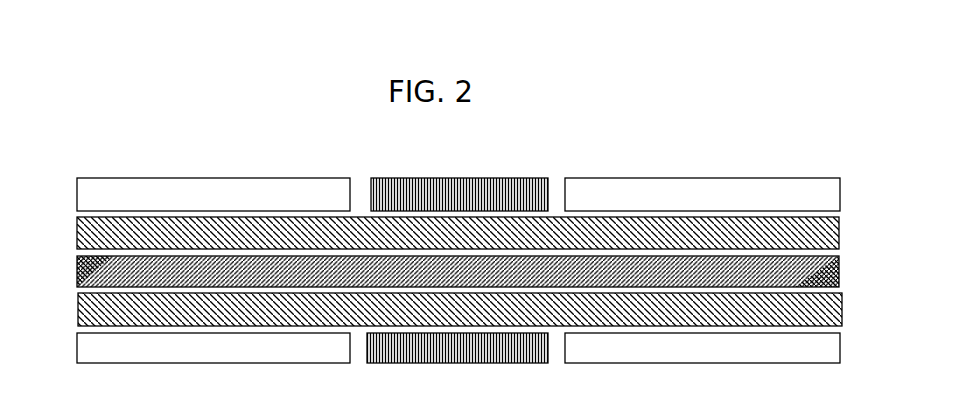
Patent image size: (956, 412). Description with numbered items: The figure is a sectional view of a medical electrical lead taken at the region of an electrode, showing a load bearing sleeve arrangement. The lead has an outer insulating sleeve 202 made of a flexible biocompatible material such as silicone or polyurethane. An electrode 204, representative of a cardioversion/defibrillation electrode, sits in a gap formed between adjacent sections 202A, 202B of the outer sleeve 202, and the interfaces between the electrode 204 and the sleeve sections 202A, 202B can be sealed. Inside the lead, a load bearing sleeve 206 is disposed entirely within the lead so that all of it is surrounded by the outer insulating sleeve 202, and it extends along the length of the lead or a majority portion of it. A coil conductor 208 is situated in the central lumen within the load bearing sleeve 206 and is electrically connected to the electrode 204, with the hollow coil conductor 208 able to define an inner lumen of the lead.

The outer insulating sleeve 202 is at (265, 153).
The outer sleeve section 202A is at (136, 178).
The outer sleeve section 202B is at (742, 178).
The electrode 204 is at (480, 178).
The load bearing sleeve 206 is at (77, 227).
The coil conductor 208 is at (77, 273).